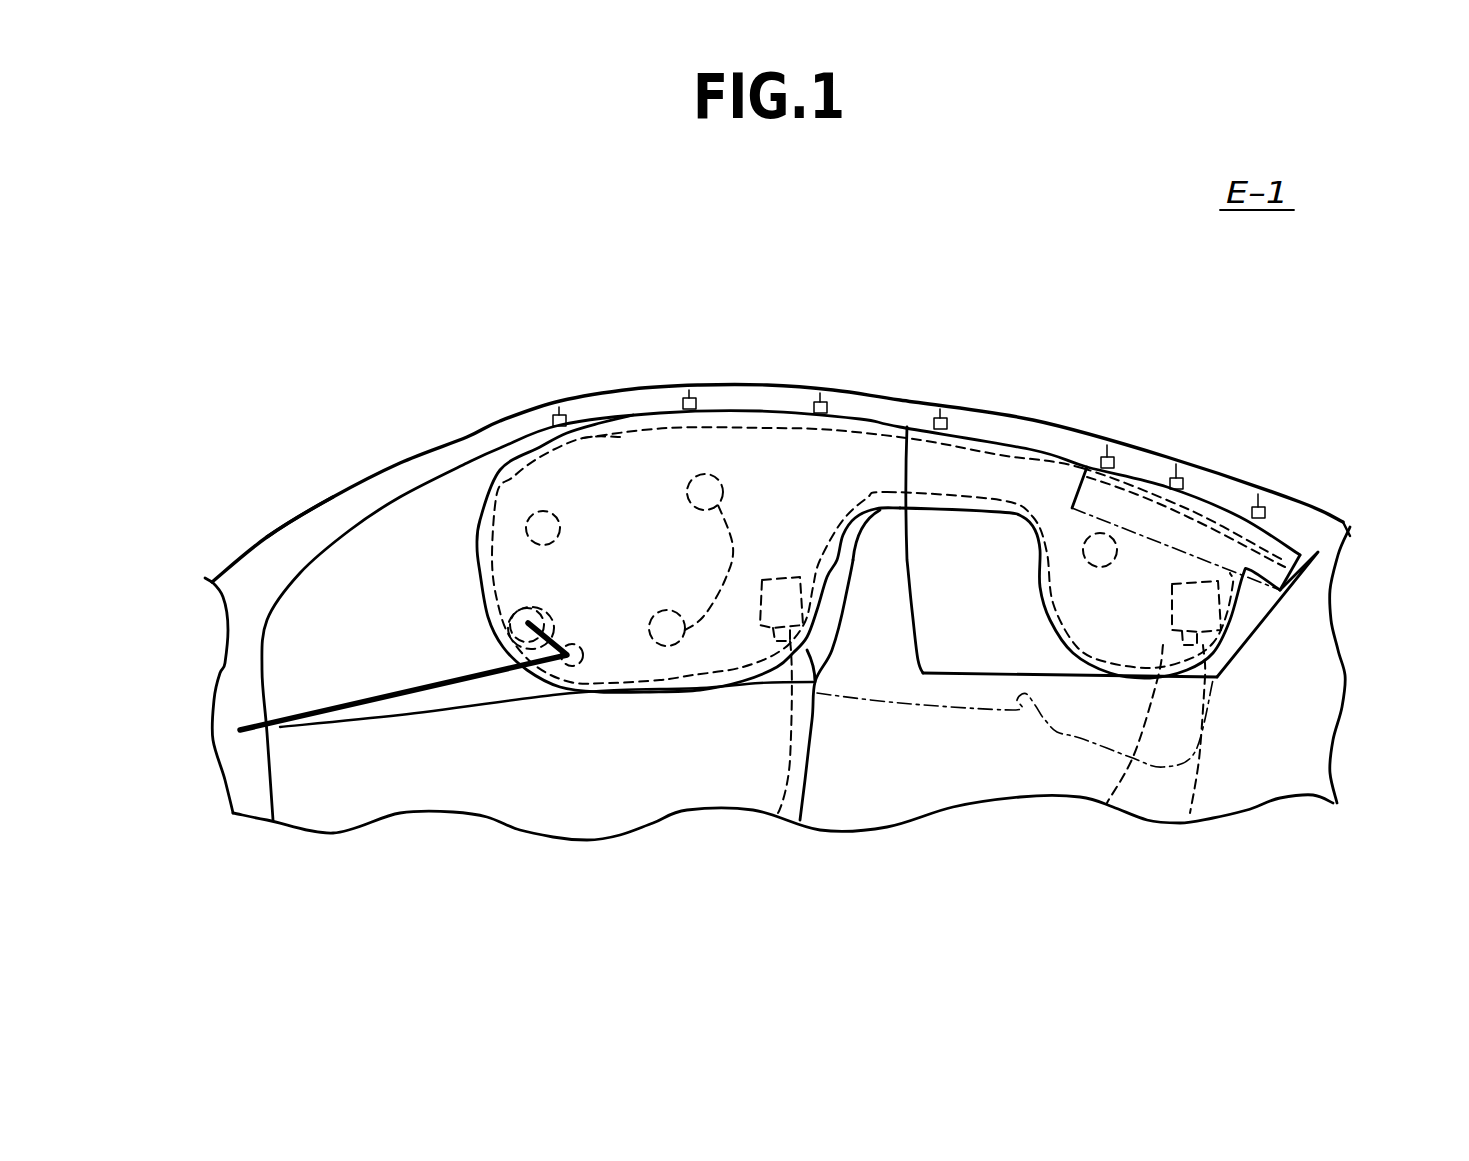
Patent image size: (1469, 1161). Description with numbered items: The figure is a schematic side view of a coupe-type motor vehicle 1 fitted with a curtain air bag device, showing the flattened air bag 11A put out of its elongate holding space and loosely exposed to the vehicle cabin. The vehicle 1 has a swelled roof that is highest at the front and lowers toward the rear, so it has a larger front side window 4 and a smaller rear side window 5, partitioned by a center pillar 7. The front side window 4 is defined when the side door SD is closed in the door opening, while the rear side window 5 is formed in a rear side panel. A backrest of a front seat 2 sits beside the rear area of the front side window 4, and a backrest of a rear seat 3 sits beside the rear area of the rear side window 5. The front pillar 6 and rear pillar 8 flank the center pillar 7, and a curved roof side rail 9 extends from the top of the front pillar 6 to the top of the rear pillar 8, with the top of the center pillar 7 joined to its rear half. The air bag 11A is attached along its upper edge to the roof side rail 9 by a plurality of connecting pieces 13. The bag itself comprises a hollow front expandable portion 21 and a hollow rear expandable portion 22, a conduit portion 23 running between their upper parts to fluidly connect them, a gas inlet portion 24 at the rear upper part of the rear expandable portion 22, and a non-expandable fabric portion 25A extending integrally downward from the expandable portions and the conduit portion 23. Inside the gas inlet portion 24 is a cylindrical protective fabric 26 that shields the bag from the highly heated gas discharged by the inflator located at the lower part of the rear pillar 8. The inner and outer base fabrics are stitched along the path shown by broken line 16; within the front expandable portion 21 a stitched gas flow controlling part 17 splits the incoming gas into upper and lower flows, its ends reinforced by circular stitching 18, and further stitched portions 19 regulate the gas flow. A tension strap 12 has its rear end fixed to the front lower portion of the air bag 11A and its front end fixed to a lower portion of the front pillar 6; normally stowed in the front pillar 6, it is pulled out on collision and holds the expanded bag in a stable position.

The motor vehicle 1 is at (452, 378).
The backrest of a front seat 2 is at (765, 640).
The backrest of a rear seat 3 is at (1130, 768).
The front side window 4 is at (373, 567).
The rear side window 5 is at (1033, 520).
The front pillar 6 is at (240, 657).
The center pillar 7 is at (905, 545).
The rear pillar 8 is at (1297, 673).
The curved roof side rail 9 is at (503, 427).
The air bag 11A is at (440, 513).
The tension strap 12 is at (372, 700).
The connecting pieces 13 is at (560, 407).
The broken line 16 is at (1107, 455).
The gas flow controlling part 17 is at (737, 555).
The circular stitching 18 is at (723, 478).
The stitched portions 19 is at (545, 620).
The front expandable portion 21 is at (643, 483).
The rear expandable portion 22 is at (1133, 600).
The conduit portion 23 is at (990, 481).
The gas inlet portion 24 is at (1275, 533).
The non-expandable fabric portion 25A is at (933, 713).
The cylindrical protective fabric 26 is at (1288, 505).
The side door SD is at (513, 787).